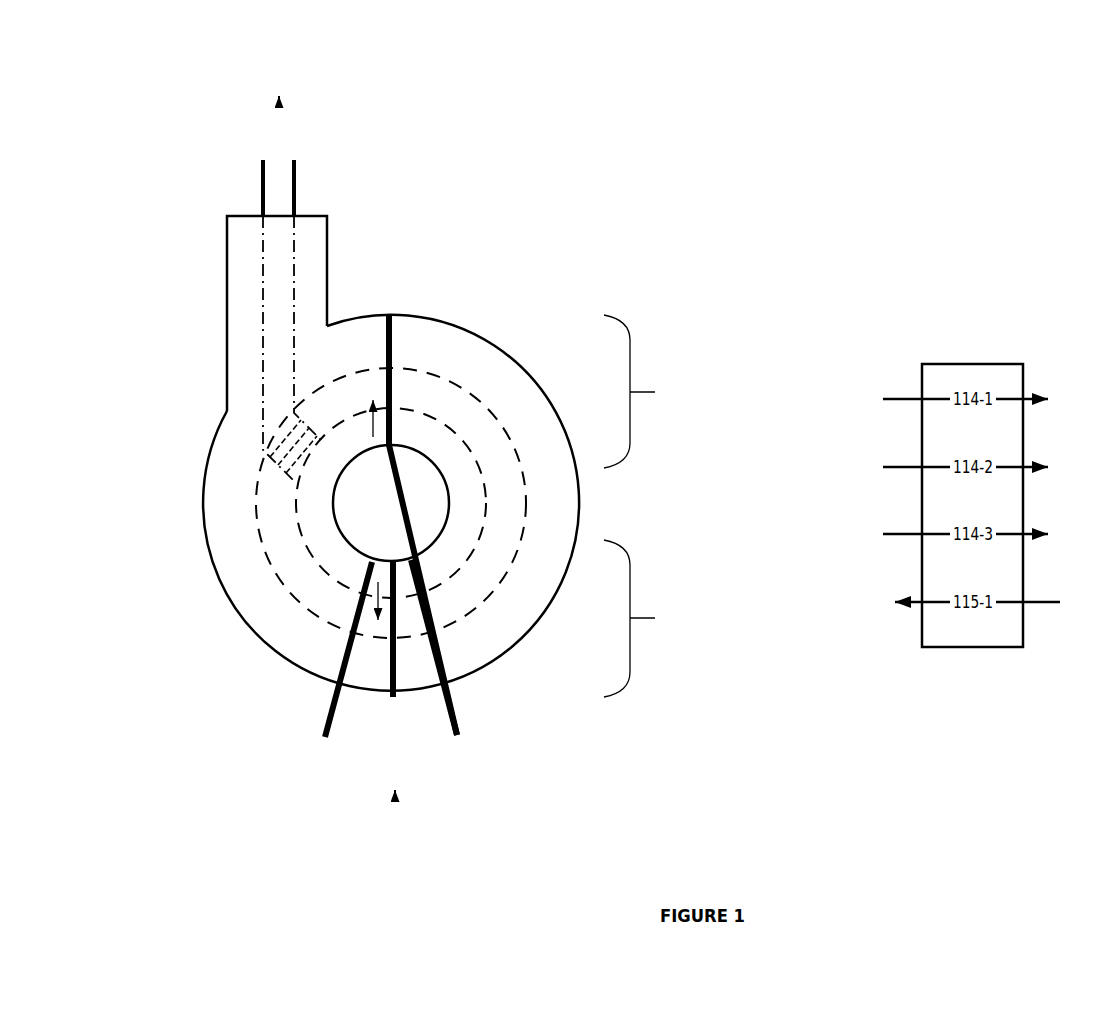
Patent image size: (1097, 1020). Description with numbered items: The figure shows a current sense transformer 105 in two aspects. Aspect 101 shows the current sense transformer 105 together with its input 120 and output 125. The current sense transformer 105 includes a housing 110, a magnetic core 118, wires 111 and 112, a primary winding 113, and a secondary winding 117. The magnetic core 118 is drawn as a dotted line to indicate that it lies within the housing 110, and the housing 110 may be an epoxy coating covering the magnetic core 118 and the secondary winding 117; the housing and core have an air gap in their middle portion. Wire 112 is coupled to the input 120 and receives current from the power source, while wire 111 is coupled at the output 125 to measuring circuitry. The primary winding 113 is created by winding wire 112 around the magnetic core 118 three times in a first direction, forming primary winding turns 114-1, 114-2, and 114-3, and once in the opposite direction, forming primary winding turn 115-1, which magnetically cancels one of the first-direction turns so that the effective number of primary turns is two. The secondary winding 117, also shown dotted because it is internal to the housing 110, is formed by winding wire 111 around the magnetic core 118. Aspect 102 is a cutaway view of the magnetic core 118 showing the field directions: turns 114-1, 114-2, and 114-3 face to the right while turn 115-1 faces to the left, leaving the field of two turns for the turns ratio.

The aspect 101 is at (124, 41).
The aspect 102 is at (810, 285).
The current sense transformer 105 is at (206, 316).
The housing 110 is at (205, 488).
The wire 111 is at (302, 163).
The wire 112 is at (322, 745).
The primary winding 113 is at (652, 506).
The primary winding turn 114-1 is at (340, 664).
The primary winding turn 114-2 is at (388, 550).
The primary winding turn 114-3 is at (450, 668).
The primary winding turn 115-1 is at (408, 330).
The secondary winding 117 is at (284, 482).
The magnetic core 118 is at (518, 552).
The input 120 is at (395, 848).
The output 125 is at (279, 153).